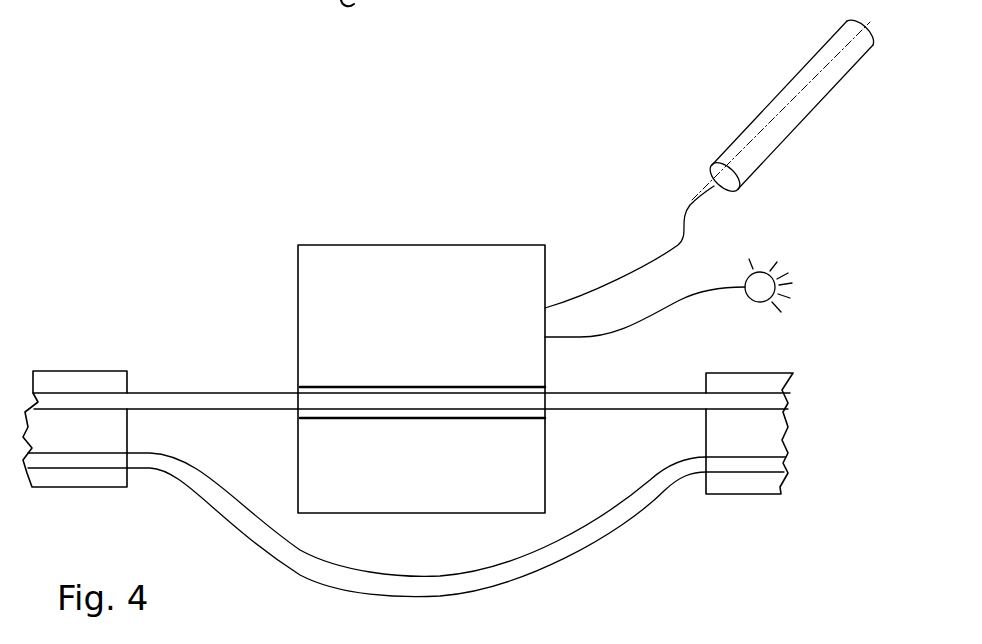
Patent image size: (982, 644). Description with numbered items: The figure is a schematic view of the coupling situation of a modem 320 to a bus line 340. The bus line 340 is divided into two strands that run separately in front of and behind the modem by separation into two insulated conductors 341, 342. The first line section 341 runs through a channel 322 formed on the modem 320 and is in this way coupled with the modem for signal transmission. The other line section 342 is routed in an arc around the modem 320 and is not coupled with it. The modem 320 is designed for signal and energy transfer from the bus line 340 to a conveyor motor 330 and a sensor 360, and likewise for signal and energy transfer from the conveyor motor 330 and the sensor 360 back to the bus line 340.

The modem 320 is at (325, 257).
The channel 322 is at (320, 387).
The conveyor motor 330 is at (752, 128).
The bus line 340 is at (829, 372).
The first line section 341 is at (205, 402).
The other line section 342 is at (229, 524).
The sensor 360 is at (762, 270).